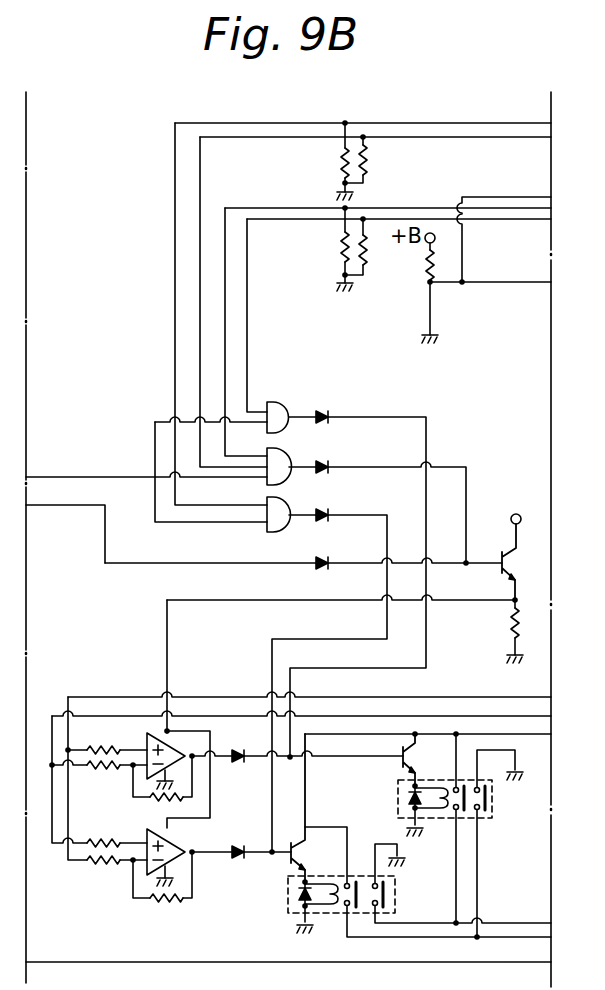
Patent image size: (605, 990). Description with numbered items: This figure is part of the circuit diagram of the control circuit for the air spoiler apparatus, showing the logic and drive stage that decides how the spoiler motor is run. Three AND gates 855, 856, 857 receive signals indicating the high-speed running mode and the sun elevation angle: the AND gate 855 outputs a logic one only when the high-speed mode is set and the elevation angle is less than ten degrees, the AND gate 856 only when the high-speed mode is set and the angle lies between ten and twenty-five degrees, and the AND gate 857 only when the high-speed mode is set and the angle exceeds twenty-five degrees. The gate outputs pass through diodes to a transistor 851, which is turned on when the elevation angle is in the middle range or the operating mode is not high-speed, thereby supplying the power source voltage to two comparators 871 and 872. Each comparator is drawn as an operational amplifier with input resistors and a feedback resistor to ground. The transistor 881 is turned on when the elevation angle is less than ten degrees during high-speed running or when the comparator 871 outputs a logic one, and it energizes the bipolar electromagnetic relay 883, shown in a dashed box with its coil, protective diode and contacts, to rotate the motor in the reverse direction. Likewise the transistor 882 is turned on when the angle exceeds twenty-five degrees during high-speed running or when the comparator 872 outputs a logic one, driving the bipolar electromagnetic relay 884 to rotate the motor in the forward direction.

The transistor 851 is at (500, 571).
The AND gate 855 is at (283, 402).
The AND gate 856 is at (291, 448).
The AND gate 857 is at (291, 493).
The comparator 871 is at (147, 742).
The comparator 872 is at (145, 835).
The transistor 881 is at (398, 762).
The transistor 882 is at (284, 865).
The bipolar electromagnetic relay 883 is at (397, 806).
The bipolar electromagnetic relay 884 is at (288, 903).